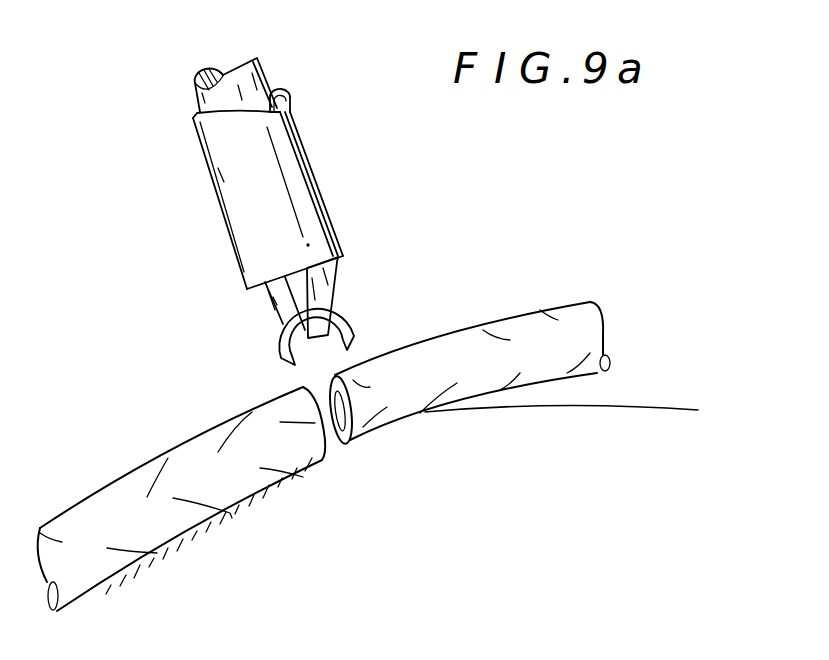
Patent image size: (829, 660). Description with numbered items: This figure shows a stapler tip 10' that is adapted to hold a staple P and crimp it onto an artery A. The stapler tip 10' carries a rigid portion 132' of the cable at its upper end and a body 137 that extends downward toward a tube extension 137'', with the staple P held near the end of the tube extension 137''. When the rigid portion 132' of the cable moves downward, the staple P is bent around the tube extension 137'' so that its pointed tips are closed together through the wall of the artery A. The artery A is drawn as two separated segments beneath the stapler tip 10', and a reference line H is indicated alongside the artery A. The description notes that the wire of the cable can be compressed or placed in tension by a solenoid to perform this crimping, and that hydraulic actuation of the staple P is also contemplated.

The stapler tip 10' is at (273, 195).
The rigid portion of the cable 132' is at (154, 71).
The instrument body 137 is at (302, 221).
The tube extension 137'' is at (382, 297).
The staple P is at (287, 357).
The artery A is at (513, 313).
The horizontal reference line H is at (652, 407).